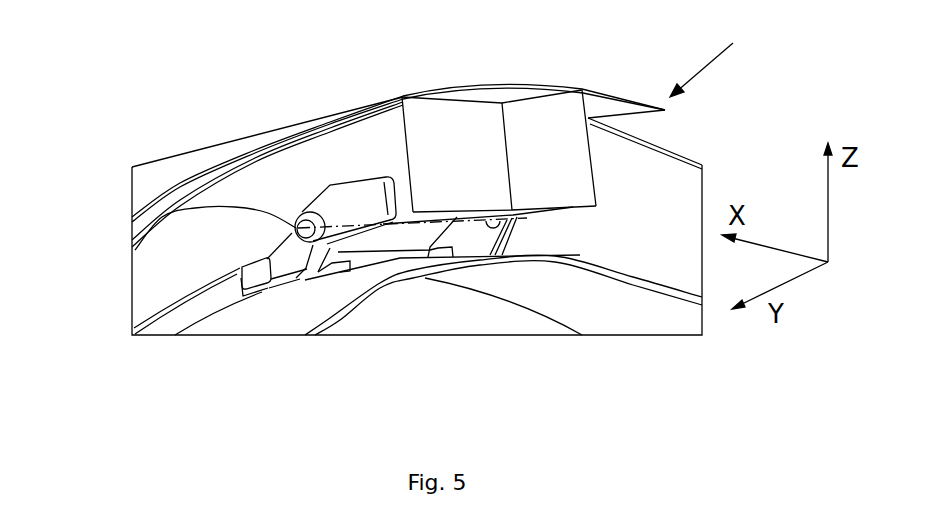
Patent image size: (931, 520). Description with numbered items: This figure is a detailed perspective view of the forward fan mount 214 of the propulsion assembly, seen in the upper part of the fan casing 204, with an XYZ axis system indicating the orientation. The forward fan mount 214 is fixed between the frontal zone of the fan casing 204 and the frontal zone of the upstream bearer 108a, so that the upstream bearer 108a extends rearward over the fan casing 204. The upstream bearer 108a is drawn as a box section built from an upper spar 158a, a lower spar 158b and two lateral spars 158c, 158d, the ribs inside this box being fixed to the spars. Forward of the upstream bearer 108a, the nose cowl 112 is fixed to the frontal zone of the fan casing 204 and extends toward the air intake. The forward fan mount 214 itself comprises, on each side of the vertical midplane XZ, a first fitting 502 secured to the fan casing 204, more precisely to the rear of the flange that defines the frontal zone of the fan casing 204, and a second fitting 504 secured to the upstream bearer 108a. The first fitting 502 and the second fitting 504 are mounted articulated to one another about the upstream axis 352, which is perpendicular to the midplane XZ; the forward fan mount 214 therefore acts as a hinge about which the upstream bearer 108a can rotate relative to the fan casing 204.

The nose cowl 112 is at (190, 168).
The lateral spar 158c is at (365, 150).
The upstream bearer 108a is at (462, 113).
The upper spar 158a is at (527, 103).
The lateral spar 158d is at (573, 148).
The lower spar 158b is at (457, 217).
The second fitting 504 is at (347, 203).
The upstream axis 352 is at (165, 215).
The first fitting 502 is at (267, 290).
The fan casing 204 is at (672, 328).
The forward fan mount 214 is at (727, 63).